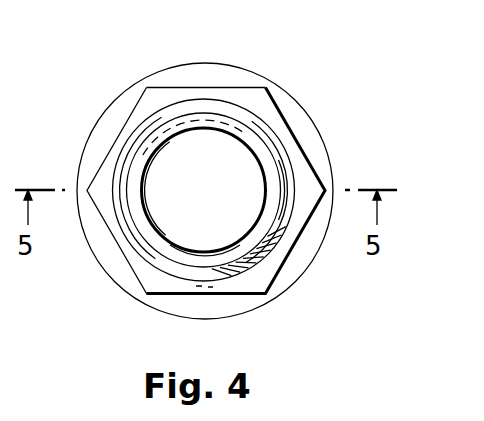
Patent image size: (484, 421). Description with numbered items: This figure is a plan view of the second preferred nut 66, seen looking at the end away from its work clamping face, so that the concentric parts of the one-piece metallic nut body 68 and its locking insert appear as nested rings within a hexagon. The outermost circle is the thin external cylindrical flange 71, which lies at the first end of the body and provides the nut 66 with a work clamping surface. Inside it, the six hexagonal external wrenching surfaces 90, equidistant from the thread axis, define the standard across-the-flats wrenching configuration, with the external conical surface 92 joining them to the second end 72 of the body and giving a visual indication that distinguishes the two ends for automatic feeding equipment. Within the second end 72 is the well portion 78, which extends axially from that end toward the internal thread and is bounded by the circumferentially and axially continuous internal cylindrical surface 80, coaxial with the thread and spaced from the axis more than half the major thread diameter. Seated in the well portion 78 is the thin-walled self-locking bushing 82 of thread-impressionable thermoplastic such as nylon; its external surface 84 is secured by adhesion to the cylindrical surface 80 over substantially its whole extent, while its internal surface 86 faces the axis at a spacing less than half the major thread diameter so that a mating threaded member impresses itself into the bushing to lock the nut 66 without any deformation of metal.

The nut 66 is at (328, 113).
The nut body 68 is at (217, 95).
The external cylindrical flange 71 is at (295, 267).
The second end 72 is at (243, 117).
The well portion 78 is at (157, 236).
The internal cylindrical surface 80 is at (281, 173).
The self-locking bushing 82 is at (220, 260).
The external surface 84 is at (127, 207).
The internal surface 86 is at (267, 198).
The hexagonal external wrenching surfaces 90 is at (177, 83).
The external conical surface 92 is at (151, 297).